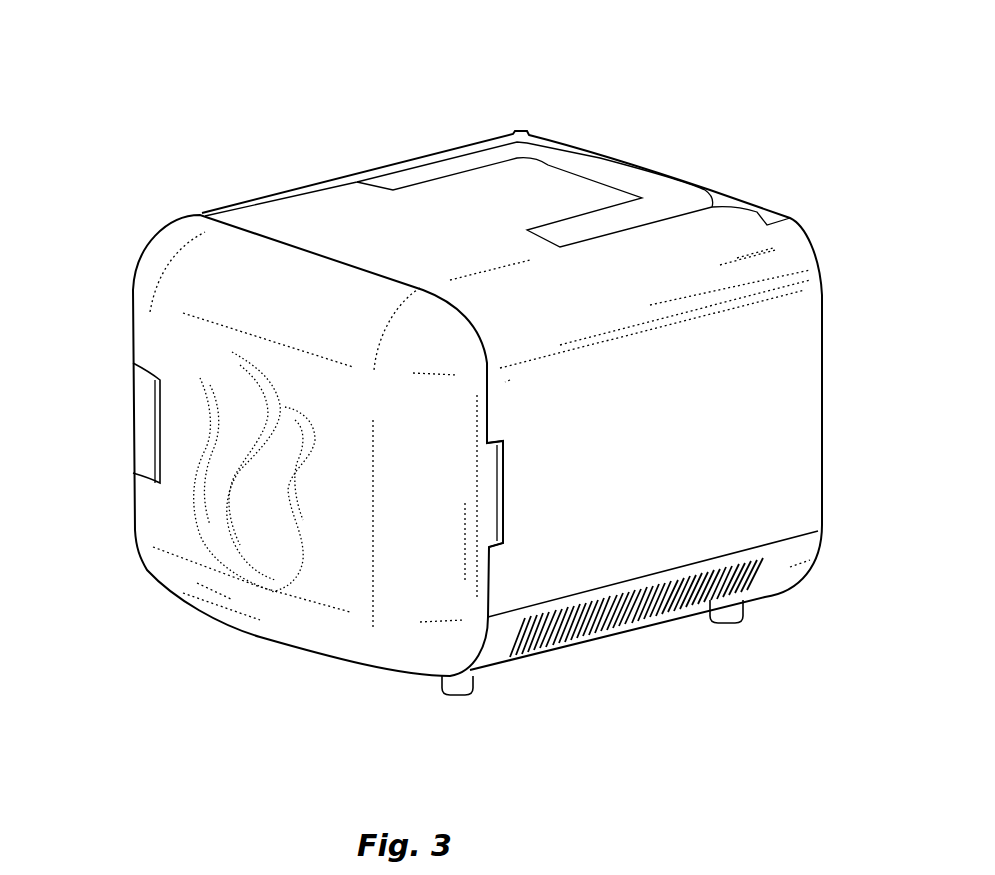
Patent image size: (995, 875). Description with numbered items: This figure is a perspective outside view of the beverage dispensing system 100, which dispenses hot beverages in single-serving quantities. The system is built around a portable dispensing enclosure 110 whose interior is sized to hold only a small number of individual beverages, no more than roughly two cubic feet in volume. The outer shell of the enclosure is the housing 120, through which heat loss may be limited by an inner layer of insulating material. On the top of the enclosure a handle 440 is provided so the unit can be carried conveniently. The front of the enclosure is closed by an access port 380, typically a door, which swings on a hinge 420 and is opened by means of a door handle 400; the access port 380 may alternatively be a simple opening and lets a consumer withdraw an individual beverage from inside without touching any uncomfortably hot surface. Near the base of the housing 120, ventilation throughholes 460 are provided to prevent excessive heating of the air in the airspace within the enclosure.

The beverage dispensing system 100 is at (310, 75).
The dispensing enclosure 110 is at (458, 235).
The housing 120 is at (711, 407).
The access port 380 is at (163, 570).
The door handle 400 is at (137, 403).
The hinge 420 is at (490, 483).
The handle 440 is at (597, 150).
The ventilation throughholes 460 is at (653, 622).